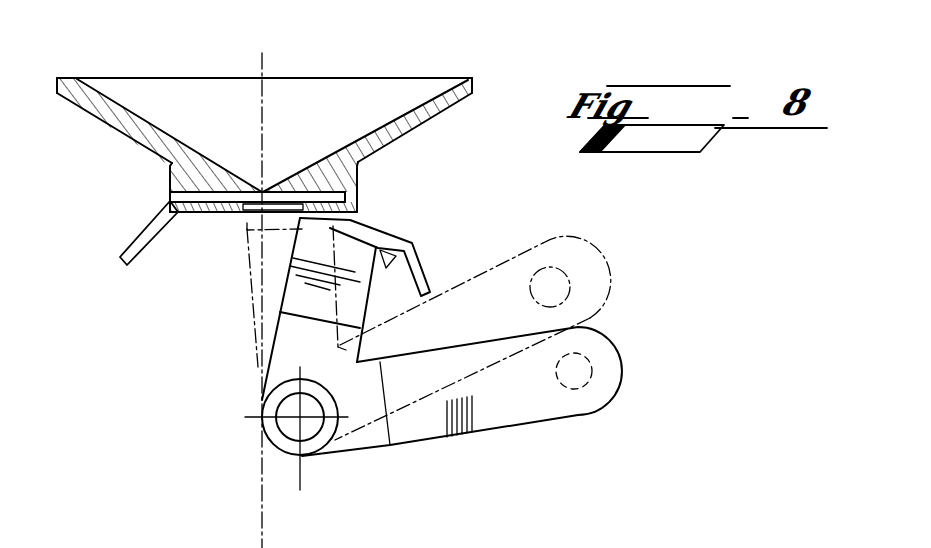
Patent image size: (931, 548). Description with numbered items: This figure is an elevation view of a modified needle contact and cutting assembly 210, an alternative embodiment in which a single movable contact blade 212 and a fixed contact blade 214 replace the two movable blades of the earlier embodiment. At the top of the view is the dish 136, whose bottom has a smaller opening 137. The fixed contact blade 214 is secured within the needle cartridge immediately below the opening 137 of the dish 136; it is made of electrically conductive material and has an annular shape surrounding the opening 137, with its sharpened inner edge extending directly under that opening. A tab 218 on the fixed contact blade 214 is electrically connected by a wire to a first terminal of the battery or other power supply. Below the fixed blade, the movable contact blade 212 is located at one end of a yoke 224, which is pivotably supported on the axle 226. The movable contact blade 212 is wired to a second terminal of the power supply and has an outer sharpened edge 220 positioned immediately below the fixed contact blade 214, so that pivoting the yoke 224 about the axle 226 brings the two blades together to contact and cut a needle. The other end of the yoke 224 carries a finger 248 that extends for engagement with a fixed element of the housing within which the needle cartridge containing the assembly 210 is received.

The dish 136 is at (187, 77).
The opening 137 is at (263, 192).
The needle contact and cutting assembly 210 is at (96, 405).
The movable contact blade 212 is at (392, 233).
The fixed contact blade 214 is at (232, 213).
The tab 218 is at (133, 262).
The outer sharpened edge 220 is at (242, 230).
The yoke 224 is at (373, 450).
The axle 226 is at (272, 428).
The finger 248 is at (608, 337).